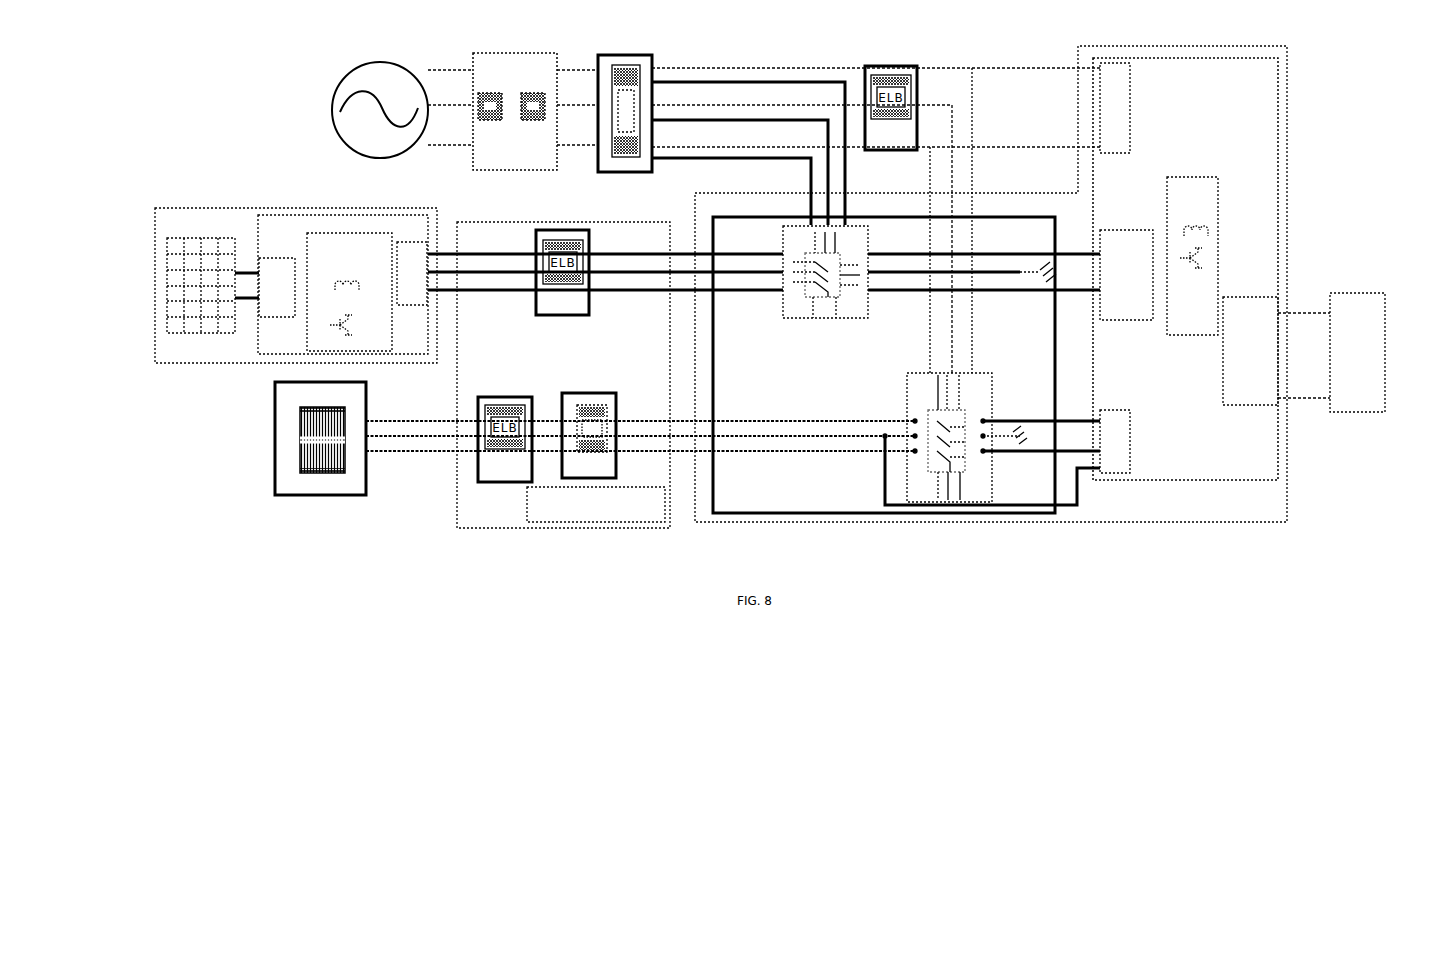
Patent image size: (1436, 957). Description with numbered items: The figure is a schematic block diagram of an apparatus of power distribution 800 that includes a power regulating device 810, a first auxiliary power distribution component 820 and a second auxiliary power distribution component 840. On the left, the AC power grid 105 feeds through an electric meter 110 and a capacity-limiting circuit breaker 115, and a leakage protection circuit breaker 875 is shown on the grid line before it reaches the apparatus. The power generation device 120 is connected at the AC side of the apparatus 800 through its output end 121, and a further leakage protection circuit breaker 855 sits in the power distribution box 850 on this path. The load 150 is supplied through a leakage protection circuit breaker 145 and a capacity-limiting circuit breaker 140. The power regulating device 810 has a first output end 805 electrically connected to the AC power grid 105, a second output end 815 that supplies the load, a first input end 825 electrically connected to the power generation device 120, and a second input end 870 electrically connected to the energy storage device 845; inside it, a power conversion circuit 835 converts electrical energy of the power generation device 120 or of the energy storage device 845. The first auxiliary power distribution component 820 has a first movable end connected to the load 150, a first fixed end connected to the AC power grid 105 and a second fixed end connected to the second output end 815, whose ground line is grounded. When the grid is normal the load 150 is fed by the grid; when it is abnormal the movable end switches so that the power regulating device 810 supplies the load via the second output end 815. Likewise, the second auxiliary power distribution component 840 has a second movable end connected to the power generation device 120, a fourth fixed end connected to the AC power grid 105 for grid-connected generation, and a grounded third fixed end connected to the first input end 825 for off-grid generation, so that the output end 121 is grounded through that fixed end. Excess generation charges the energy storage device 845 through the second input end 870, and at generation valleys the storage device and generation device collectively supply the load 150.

The AC power grid 105 is at (381, 58).
The electric meter 110 is at (520, 52).
The capacity-limiting circuit breaker 115 is at (633, 55).
The power generation device 120 is at (275, 207).
The output end 121 is at (415, 243).
The capacity-limiting circuit breaker 140 is at (590, 393).
The leakage protection circuit breaker 145 is at (503, 397).
The load 150 is at (273, 436).
The apparatus of power distribution 800 is at (1112, 43).
The first output end 805 is at (1132, 100).
The power regulating device 810 is at (1215, 58).
The second output end 815 is at (1133, 418).
The first auxiliary power distribution component 820 is at (990, 373).
The first input end 825 is at (1118, 230).
The power conversion circuit 835 is at (1197, 177).
The second auxiliary power distribution component 840 is at (853, 225).
The energy storage device 845 is at (1355, 293).
The power distribution box 850 is at (562, 222).
The earth leakage breaker 855 is at (598, 255).
The second input end 870 is at (1278, 345).
The earth leakage breaker 875 is at (890, 66).